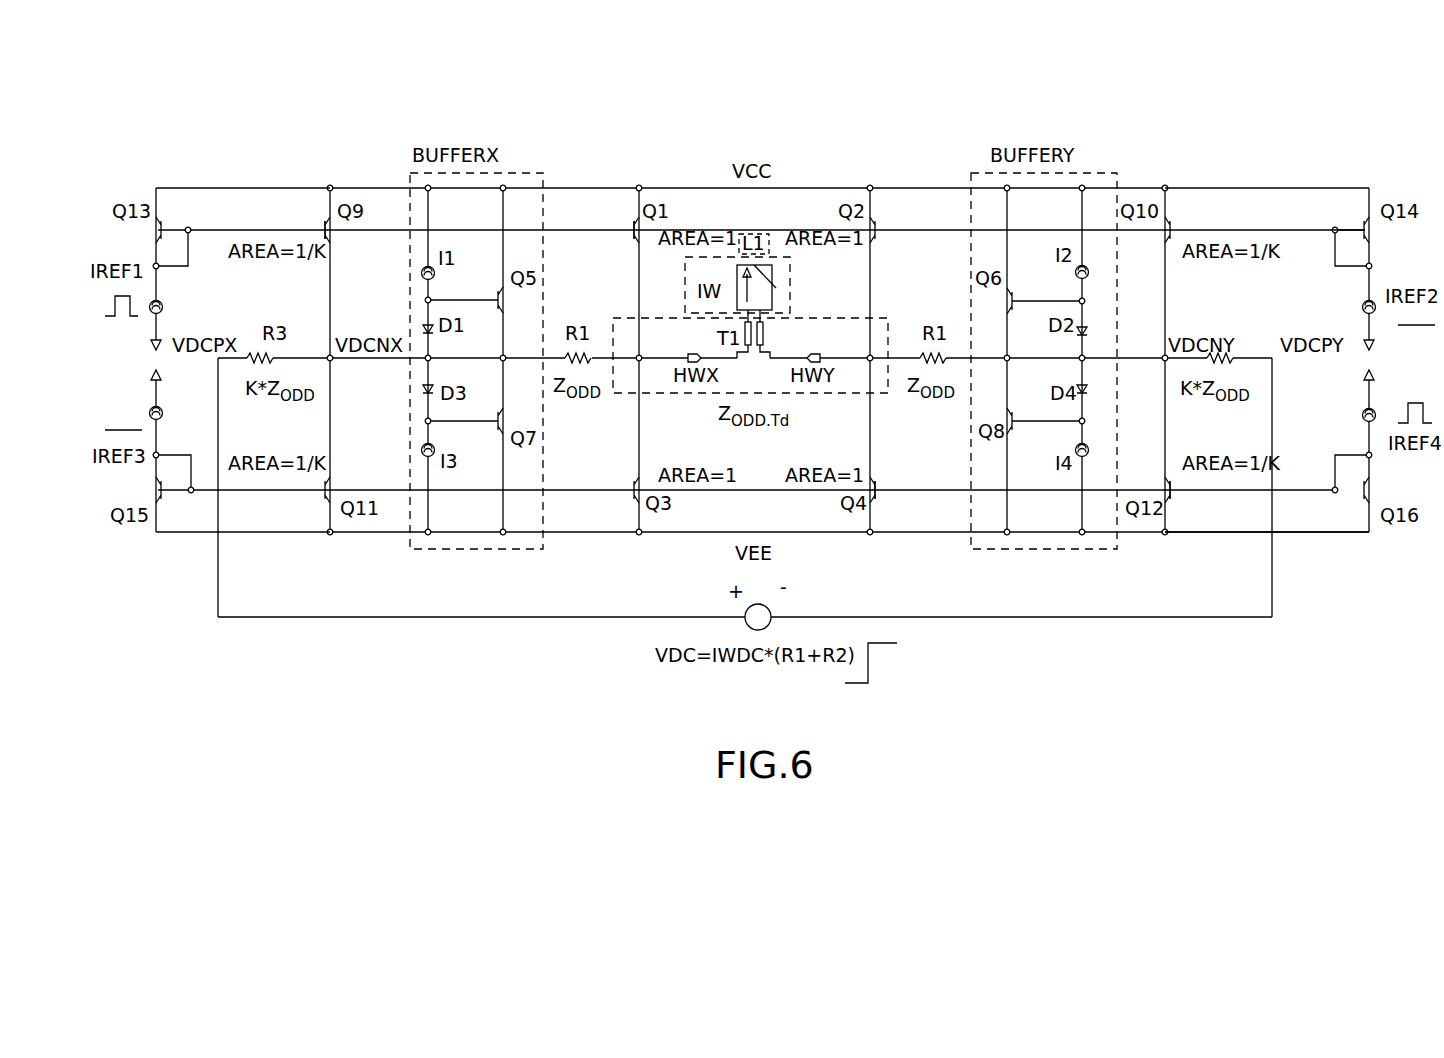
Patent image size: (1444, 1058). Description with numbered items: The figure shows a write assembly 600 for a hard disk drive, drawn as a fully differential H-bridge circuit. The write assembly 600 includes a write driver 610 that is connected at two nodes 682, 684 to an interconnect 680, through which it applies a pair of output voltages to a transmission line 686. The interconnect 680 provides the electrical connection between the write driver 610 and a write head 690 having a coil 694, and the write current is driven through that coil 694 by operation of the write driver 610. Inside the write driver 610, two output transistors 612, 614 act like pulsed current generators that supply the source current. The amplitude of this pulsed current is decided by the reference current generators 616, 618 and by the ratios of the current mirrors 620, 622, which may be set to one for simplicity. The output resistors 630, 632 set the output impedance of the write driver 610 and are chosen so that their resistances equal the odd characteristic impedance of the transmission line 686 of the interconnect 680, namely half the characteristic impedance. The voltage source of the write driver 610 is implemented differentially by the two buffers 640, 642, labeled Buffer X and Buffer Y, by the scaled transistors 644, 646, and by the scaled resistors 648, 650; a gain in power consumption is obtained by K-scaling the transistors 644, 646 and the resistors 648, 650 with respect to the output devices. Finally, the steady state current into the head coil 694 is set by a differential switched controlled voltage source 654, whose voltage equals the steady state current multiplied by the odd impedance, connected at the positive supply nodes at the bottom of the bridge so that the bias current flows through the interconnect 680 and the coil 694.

The write assembly 600 is at (363, 85).
The write driver 610 is at (277, 155).
The current mirror 620 is at (222, 205).
The current mirror 622 is at (1310, 523).
The buffer 640 is at (540, 172).
The buffer 642 is at (1118, 172).
The transistor 612 is at (631, 226).
The transistor 614 is at (878, 492).
The transistor 644 is at (336, 236).
The transistor 646 is at (1173, 492).
The reference current generator 616 is at (165, 310).
The reference current generator 618 is at (1364, 418).
The resistor 648 is at (284, 332).
The resistor 650 is at (1243, 345).
The resistor 630 is at (583, 342).
The resistor 632 is at (934, 342).
The write head 690 is at (760, 250).
The coil 694 is at (776, 288).
The interconnect 680 is at (863, 312).
The node 682 is at (645, 358).
The node 684 is at (870, 358).
The transmission line 686 is at (767, 374).
The differential switched controlled voltage source 654 is at (712, 680).